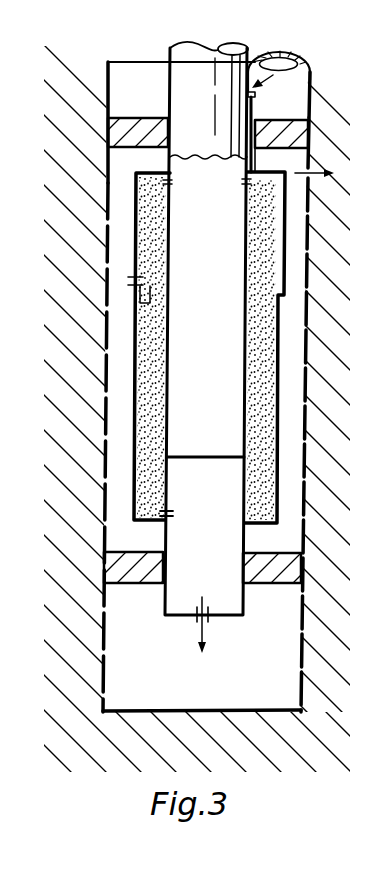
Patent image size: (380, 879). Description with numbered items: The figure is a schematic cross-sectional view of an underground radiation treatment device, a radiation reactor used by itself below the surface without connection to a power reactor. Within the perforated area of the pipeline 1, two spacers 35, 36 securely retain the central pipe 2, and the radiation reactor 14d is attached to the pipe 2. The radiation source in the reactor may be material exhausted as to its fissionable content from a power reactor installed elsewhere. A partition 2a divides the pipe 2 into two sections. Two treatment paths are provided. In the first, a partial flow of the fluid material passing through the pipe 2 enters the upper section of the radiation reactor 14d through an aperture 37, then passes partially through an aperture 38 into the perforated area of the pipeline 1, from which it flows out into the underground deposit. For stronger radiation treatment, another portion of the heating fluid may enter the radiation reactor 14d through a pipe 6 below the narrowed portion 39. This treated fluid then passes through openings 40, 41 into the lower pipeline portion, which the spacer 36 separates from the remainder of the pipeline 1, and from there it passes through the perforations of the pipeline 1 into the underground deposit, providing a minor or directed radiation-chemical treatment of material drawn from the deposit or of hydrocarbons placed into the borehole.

The pipeline 1 is at (107, 82).
The pipe 2 is at (171, 237).
The partition 2a is at (184, 455).
The pipe 6 is at (261, 107).
The radiation reactor 14d is at (150, 390).
The spacer 35 is at (157, 127).
The spacer 36 is at (122, 570).
The aperture 37 is at (173, 181).
The aperture 38 is at (126, 281).
The narrowed portion 39 is at (140, 303).
The opening 40 is at (174, 514).
The opening 41 is at (193, 628).